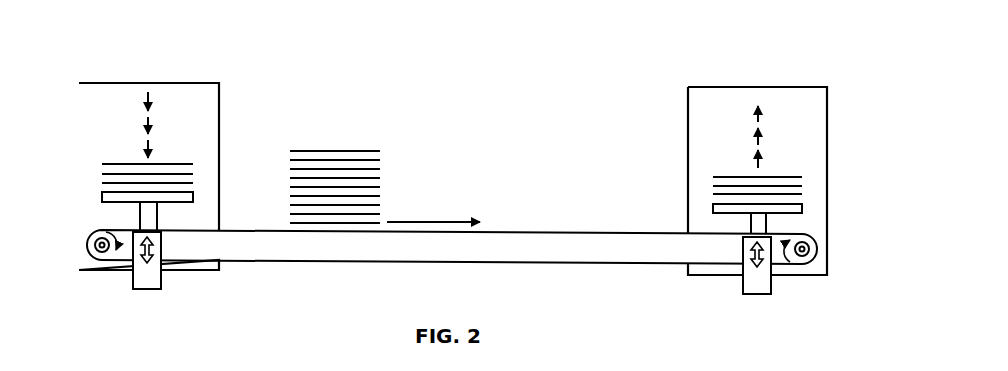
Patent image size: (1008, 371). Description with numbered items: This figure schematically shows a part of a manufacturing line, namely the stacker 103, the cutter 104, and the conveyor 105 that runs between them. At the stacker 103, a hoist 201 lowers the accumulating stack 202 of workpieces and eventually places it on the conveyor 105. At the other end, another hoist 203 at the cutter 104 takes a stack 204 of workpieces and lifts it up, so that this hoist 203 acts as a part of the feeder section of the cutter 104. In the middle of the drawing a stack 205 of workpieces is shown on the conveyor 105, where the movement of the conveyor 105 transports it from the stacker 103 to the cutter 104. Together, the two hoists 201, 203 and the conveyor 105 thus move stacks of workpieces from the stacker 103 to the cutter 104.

The stacker 103 is at (102, 92).
The cutter 104 is at (704, 97).
The conveyor 105 is at (303, 252).
The hoist 201 is at (149, 280).
The accumulating stack 202 is at (178, 172).
The hoist 203 is at (757, 285).
The stack 204 is at (717, 185).
The stack 205 is at (340, 168).